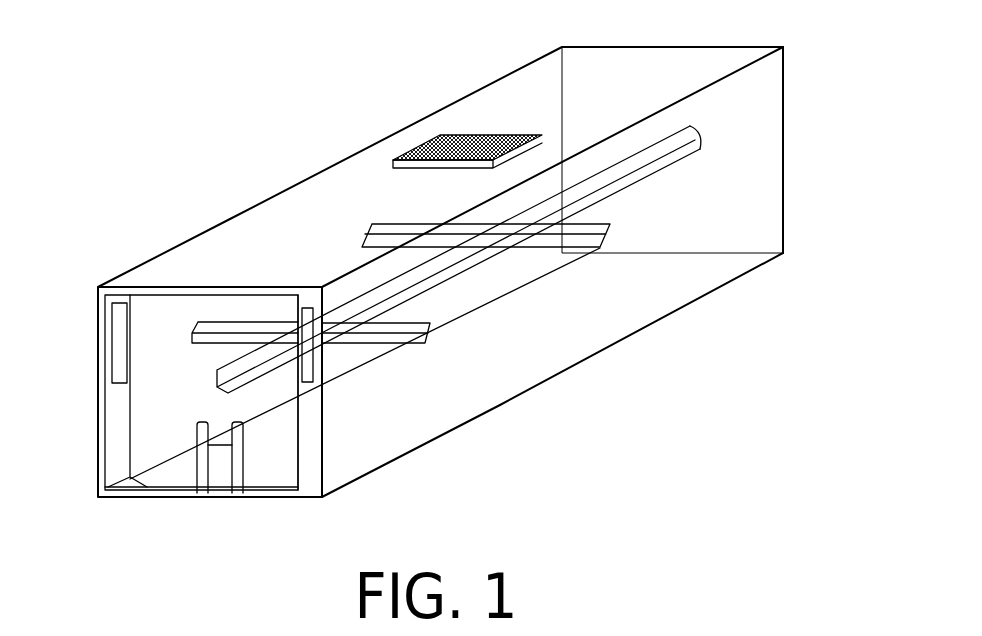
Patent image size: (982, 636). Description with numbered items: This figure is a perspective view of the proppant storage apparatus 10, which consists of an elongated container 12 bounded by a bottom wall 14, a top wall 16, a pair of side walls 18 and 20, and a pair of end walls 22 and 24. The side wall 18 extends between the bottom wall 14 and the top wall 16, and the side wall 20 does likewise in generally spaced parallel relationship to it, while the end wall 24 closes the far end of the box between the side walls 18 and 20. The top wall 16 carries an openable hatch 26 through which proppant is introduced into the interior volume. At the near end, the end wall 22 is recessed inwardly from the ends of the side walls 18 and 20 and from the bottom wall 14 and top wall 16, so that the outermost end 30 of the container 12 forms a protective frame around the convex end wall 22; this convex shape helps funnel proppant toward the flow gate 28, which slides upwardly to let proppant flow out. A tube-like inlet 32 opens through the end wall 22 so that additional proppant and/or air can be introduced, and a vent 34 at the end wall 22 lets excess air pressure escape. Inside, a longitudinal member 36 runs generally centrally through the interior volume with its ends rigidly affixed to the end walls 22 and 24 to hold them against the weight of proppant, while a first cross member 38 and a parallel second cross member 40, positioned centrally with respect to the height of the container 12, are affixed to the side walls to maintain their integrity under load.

The proppant storage apparatus 10 is at (676, 356).
The container 12 is at (418, 446).
The bottom wall 14 is at (566, 368).
The top wall 16 is at (290, 188).
The side wall 18 is at (517, 361).
The side wall 20 is at (163, 253).
The end wall 22 is at (172, 488).
The end wall 24 is at (785, 160).
The hatch 26 is at (475, 128).
The flow gate 28 is at (222, 486).
The outermost end 30 is at (98, 413).
The inlet 32 is at (323, 363).
The vent 34 is at (118, 355).
The longitudinal member 36 is at (433, 275).
The first cross member 38 is at (395, 337).
The second cross member 40 is at (570, 247).